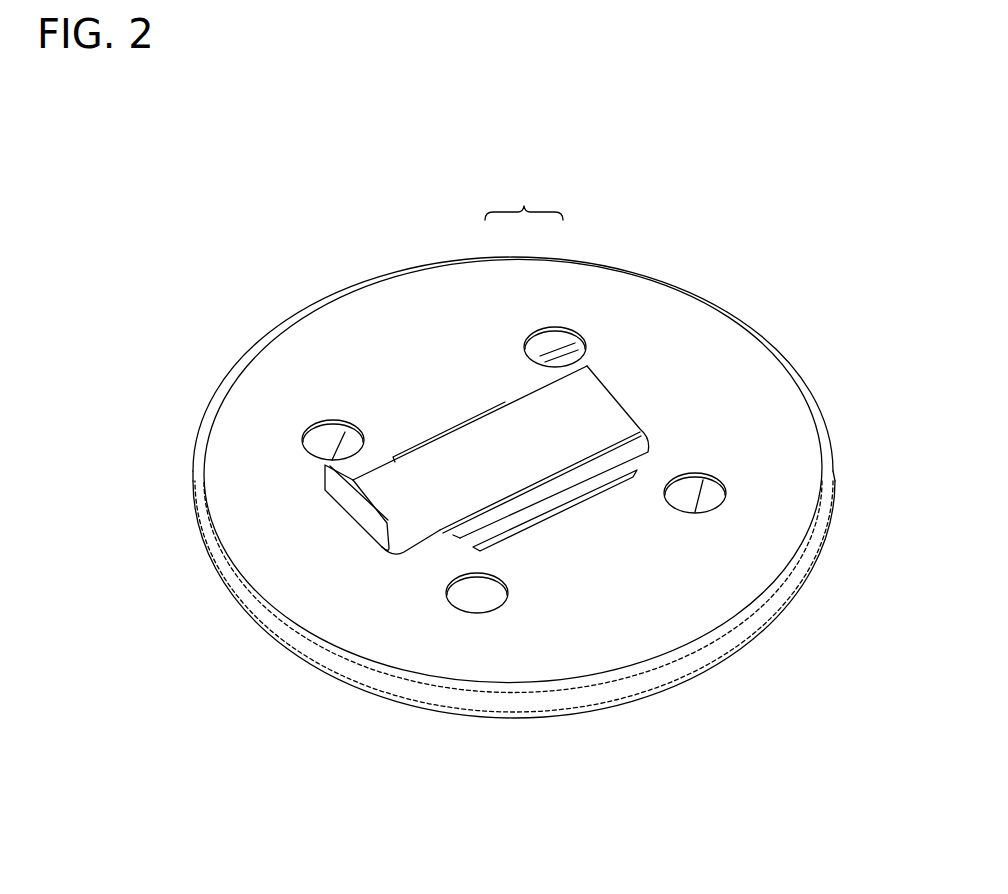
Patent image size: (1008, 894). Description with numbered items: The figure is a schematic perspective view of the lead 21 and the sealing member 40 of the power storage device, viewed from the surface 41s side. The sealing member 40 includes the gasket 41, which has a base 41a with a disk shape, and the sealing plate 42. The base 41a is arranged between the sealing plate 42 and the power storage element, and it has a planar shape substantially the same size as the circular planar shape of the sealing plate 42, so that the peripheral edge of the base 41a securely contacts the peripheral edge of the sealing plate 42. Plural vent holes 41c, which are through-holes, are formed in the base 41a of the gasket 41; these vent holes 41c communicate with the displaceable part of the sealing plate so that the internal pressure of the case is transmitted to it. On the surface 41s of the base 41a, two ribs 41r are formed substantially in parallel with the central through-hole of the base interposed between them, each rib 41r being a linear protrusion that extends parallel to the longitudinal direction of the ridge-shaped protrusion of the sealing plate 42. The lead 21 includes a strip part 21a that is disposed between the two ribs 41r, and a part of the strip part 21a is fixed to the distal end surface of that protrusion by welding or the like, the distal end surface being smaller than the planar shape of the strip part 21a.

The lead 21 is at (460, 447).
The strip part 21a is at (583, 470).
The sealing member 40 is at (524, 201).
The gasket 41 is at (503, 285).
The base 41a is at (750, 383).
The vent holes 41c is at (570, 330).
The ribs 41r is at (410, 443).
The surface 41s is at (717, 357).
The sealing plate 42 is at (552, 347).